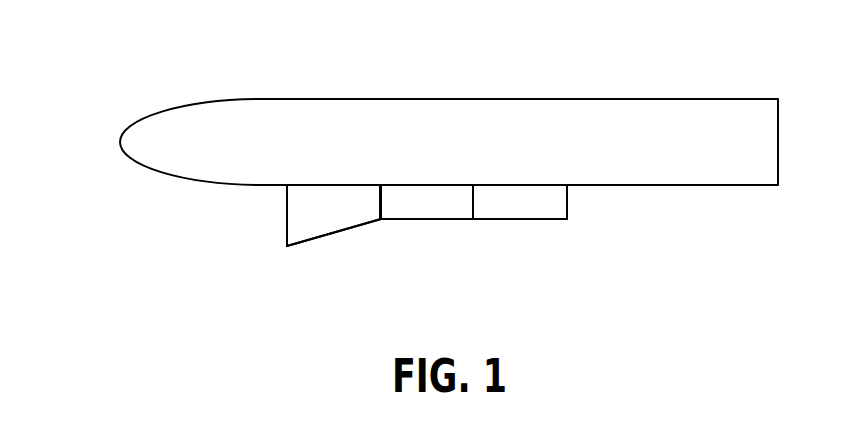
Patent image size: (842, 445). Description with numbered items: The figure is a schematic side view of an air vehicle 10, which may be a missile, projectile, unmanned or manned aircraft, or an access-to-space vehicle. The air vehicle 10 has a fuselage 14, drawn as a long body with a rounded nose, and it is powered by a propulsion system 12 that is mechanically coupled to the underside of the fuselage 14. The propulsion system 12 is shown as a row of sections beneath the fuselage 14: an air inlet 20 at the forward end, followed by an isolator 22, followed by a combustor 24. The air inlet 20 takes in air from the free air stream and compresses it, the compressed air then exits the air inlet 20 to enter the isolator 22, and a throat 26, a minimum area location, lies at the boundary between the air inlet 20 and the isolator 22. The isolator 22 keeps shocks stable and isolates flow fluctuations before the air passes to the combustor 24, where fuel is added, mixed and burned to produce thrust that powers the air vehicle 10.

The air vehicle 10 is at (146, 90).
The propulsion system 12 is at (268, 256).
The fuselage 14 is at (175, 153).
The air inlet 20 is at (335, 207).
The isolator 22 is at (432, 207).
The combustor 24 is at (525, 207).
The throat 26 is at (380, 197).